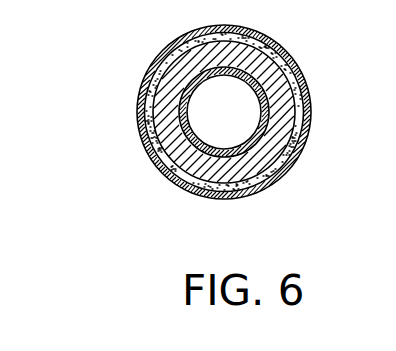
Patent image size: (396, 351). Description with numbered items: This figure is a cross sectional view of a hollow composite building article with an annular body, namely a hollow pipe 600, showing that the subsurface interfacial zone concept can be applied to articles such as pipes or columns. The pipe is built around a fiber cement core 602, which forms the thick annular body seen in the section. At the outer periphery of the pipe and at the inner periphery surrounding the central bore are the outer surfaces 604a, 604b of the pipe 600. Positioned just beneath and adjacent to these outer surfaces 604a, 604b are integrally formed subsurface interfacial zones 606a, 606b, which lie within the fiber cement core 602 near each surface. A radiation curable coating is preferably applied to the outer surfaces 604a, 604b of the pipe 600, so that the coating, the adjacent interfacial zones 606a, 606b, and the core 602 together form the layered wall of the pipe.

The hollow pipe 600 is at (97, 148).
The fiber cement core 602 is at (215, 176).
The outer surface 604a is at (139, 97).
The outer surface 604b is at (190, 90).
The subsurface interfacial zone 606a is at (173, 175).
The subsurface interfacial zone 606b is at (205, 148).